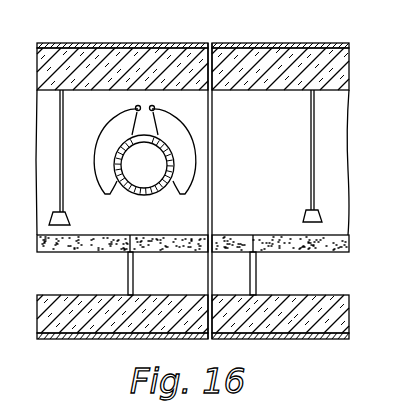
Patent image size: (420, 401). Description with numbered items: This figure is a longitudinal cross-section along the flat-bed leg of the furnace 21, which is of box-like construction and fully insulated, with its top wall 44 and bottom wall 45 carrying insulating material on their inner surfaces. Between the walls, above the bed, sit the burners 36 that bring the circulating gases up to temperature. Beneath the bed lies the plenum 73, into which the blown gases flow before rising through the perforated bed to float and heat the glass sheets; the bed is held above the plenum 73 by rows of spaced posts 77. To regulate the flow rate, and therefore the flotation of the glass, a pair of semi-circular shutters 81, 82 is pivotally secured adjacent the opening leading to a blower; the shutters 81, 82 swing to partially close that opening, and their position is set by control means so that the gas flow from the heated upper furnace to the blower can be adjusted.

The furnace 21 is at (100, 20).
The top wall 44 is at (303, 43).
The bottom wall 45 is at (107, 340).
The plenum 73 is at (283, 288).
The burners 36 is at (52, 216).
The posts 77 is at (128, 268).
The shutter 81 is at (110, 142).
The shutter 82 is at (151, 105).